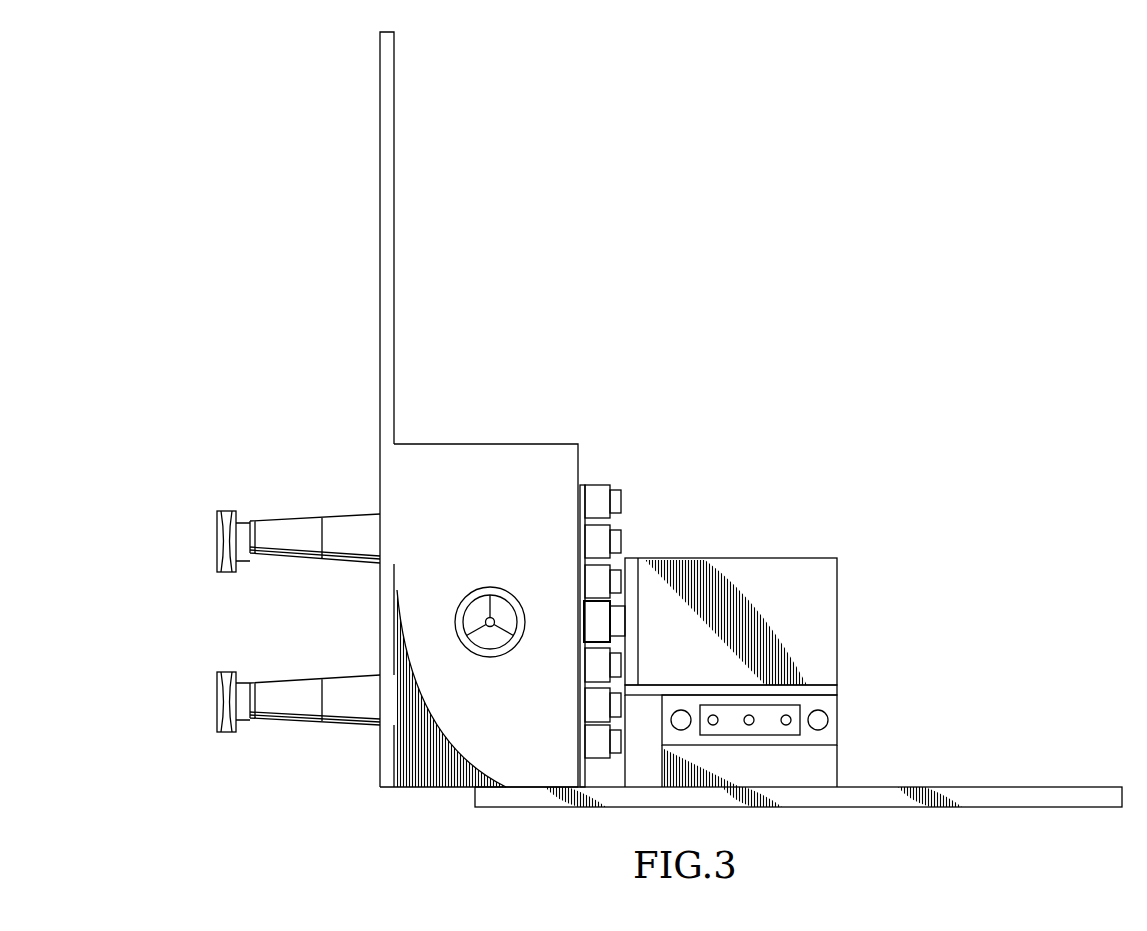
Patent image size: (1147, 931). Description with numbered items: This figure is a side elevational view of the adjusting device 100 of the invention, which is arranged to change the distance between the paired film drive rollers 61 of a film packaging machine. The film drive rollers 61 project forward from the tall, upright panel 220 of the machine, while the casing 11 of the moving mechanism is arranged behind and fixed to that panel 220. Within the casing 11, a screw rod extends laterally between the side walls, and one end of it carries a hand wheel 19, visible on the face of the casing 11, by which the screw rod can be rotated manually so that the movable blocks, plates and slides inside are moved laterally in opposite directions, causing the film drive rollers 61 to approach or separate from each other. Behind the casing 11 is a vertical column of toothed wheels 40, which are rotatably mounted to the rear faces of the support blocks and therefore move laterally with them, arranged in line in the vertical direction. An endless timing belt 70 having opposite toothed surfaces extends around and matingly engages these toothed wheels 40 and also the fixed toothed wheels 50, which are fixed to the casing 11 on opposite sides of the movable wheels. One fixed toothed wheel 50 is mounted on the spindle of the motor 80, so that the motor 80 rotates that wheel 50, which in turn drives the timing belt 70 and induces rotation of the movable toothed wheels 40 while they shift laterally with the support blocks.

The adjusting device 100 is at (716, 352).
The panel 220 is at (390, 192).
The casing 11 is at (452, 462).
The hand wheel 19 is at (490, 590).
The toothed wheels 40 is at (598, 495).
The fixed toothed wheels 50 is at (595, 622).
The timing belt 70 is at (615, 632).
The motor 80 is at (780, 577).
The film drive rollers 61 is at (290, 540).